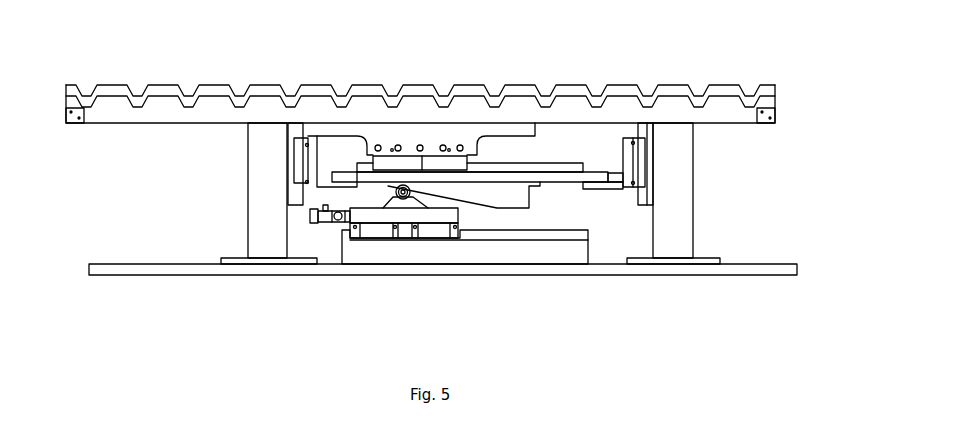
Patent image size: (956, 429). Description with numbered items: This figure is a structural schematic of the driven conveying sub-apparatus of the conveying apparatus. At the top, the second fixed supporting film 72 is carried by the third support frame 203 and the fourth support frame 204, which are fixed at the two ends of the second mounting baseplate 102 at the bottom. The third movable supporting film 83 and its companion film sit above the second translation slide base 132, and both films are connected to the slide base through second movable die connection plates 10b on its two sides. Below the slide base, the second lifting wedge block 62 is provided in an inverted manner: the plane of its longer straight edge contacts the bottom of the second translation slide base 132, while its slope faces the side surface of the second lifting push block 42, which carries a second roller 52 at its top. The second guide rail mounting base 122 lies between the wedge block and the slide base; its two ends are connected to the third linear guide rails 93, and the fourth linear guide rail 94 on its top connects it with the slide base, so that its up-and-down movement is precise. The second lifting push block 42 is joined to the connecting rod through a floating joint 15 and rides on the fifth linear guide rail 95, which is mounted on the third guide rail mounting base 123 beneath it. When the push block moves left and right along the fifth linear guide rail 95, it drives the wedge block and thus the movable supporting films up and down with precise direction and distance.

The second fixed supporting film 72 is at (120, 92).
The third movable supporting film 83 is at (210, 113).
The third linear guide rail 93 is at (300, 163).
The fourth linear guide rail 94 is at (443, 163).
The second movable die connection plate 10b is at (366, 132).
The second translation slide base 132 is at (384, 157).
The second roller 52 is at (408, 188).
The second lifting wedge block 62 is at (488, 197).
The second guide rail mounting base 122 is at (568, 178).
The second mounting baseplate 102 is at (150, 270).
The third support frame 203 is at (270, 227).
The fourth support frame 204 is at (678, 233).
The floating joint 15 is at (320, 225).
The second lifting push block 42 is at (372, 213).
The fifth linear guide rail 95 is at (428, 230).
The third guide rail mounting base 123 is at (490, 248).